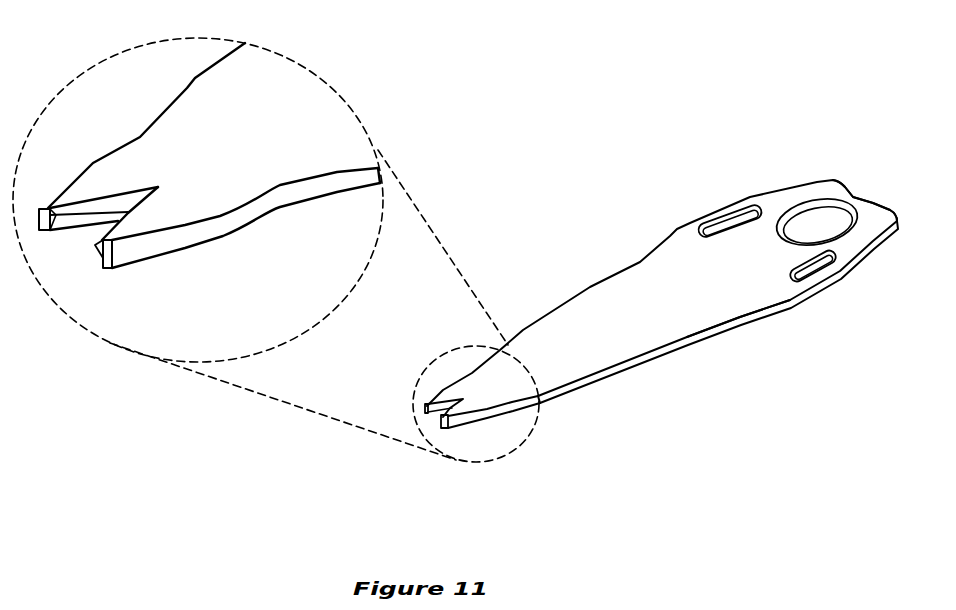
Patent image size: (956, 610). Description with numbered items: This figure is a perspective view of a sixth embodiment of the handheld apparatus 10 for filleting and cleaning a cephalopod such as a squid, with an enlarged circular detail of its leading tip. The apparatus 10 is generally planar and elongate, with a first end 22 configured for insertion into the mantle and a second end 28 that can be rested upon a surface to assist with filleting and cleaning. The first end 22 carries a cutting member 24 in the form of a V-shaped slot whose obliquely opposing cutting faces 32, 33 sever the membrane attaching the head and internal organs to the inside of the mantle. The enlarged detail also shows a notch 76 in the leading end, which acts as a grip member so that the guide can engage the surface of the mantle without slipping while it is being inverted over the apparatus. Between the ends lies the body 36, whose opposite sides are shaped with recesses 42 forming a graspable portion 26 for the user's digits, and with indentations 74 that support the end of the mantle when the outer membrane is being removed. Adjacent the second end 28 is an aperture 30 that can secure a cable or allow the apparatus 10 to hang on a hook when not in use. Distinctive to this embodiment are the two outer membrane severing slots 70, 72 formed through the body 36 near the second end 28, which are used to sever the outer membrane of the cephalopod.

The handheld apparatus 10 is at (768, 465).
The first end 22 is at (563, 422).
The cutting member 24 is at (430, 428).
The graspable portion 26 is at (667, 207).
The second end 28 is at (885, 170).
The aperture 30 is at (805, 200).
The cutting face 32 is at (92, 212).
The cutting face 33 is at (112, 230).
The body 36 is at (300, 112).
The recesses 42 is at (718, 322).
The outer membrane severing slot 70 is at (727, 213).
The outer membrane severing slot 72 is at (818, 277).
The indentations 74 is at (138, 138).
The notch 76 is at (103, 252).